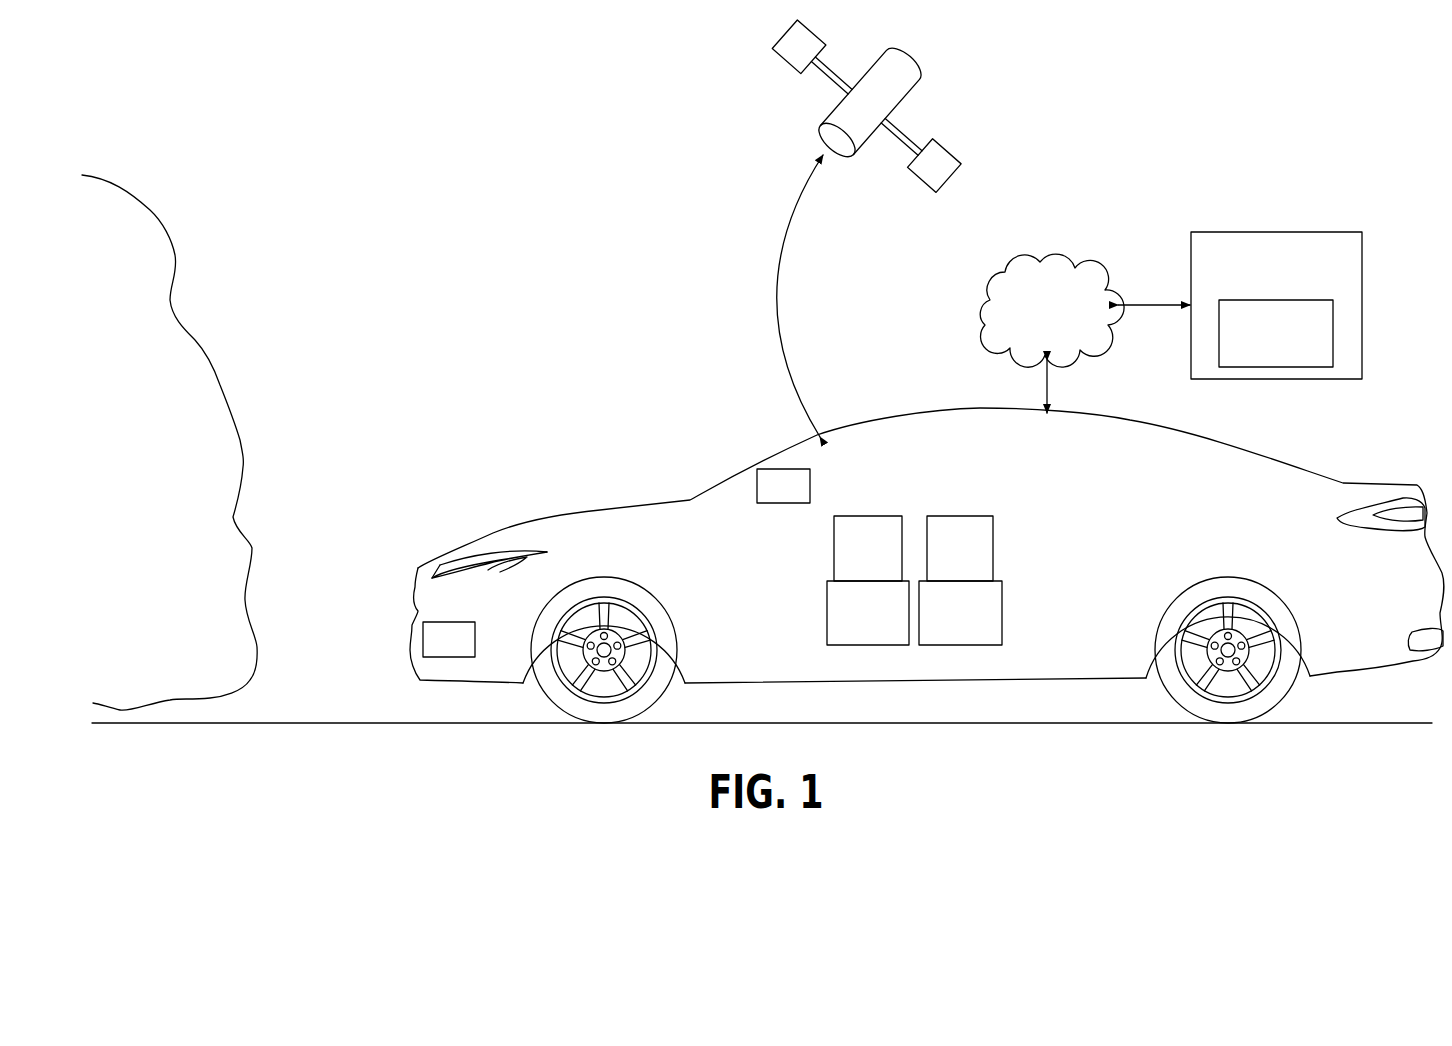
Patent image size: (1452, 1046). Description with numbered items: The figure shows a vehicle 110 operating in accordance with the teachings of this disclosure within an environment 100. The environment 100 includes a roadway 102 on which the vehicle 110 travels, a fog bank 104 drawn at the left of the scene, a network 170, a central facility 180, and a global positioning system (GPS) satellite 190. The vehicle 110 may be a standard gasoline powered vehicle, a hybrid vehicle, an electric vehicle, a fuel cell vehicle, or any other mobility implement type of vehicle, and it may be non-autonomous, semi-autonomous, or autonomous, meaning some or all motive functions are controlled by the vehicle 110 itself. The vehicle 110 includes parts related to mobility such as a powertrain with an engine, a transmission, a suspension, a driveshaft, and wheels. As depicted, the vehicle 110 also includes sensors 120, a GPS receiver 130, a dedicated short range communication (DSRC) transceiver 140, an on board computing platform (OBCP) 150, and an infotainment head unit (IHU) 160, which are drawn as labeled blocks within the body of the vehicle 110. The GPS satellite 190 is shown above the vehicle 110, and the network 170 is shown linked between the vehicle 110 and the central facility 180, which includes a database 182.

The environment 100 is at (393, 143).
The roadway 102 is at (345, 723).
The fog bank 104 is at (185, 368).
The vehicle 110 is at (566, 346).
The sensors 120 is at (431, 653).
The GPS receiver 130 is at (941, 573).
The dedicated short range communication (DSRC) transceiver 140 is at (941, 638).
The on board computing platform (OBCP) 150 is at (849, 638).
The infotainment head unit (IHU) 160 is at (849, 573).
The network 170 is at (1028, 336).
The central facility 180 is at (1296, 290).
The database 182 is at (1296, 356).
The global positioning system (GPS) satellite 190 is at (818, 132).